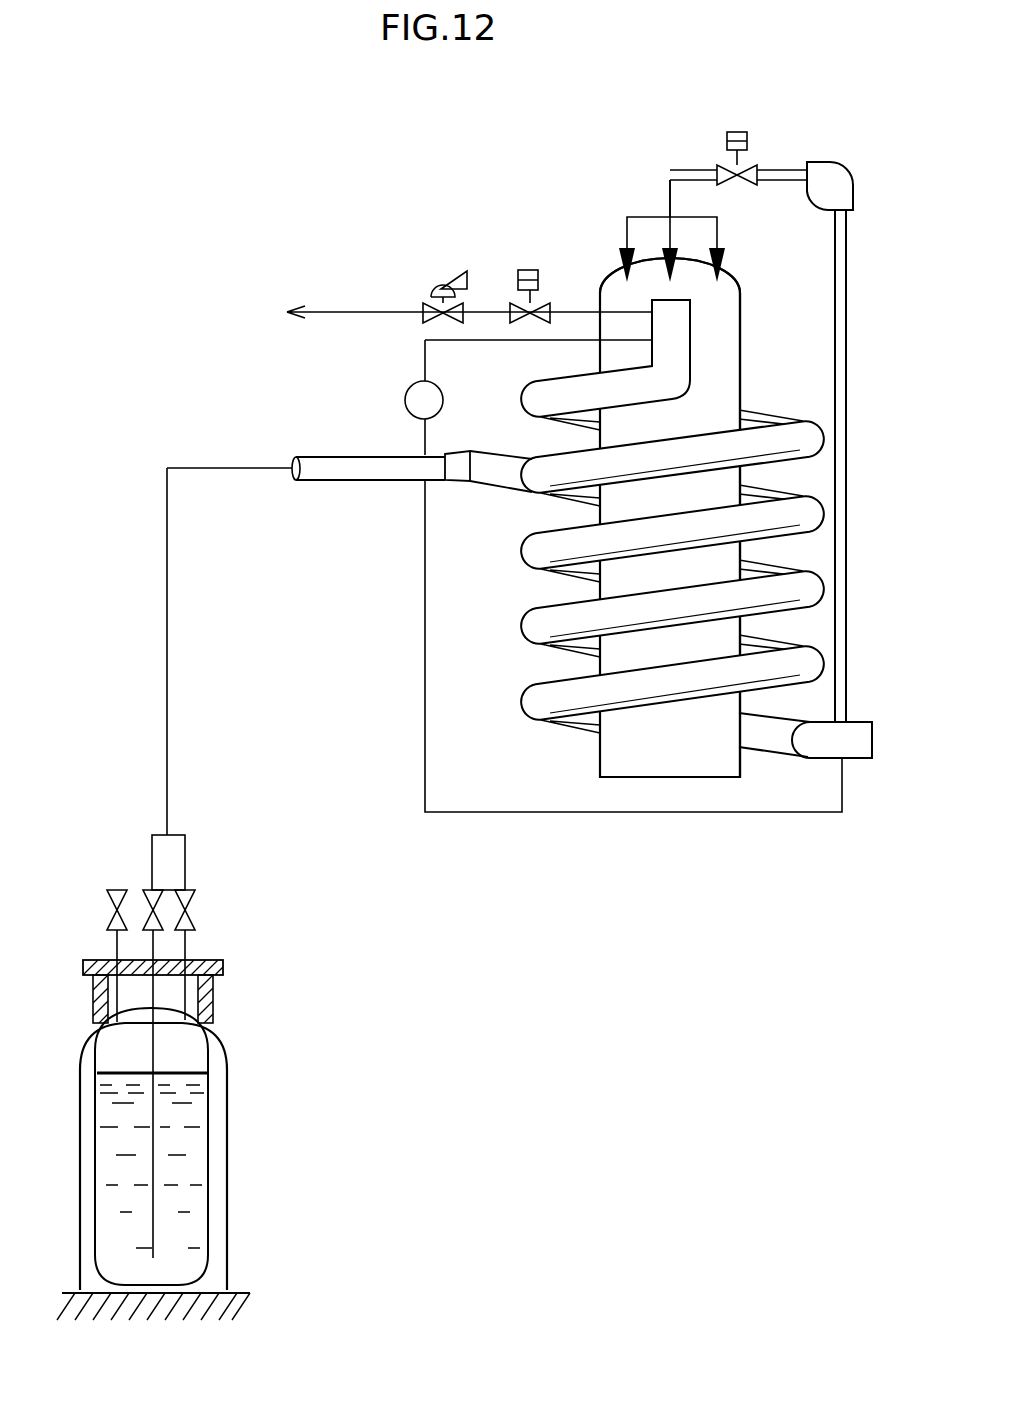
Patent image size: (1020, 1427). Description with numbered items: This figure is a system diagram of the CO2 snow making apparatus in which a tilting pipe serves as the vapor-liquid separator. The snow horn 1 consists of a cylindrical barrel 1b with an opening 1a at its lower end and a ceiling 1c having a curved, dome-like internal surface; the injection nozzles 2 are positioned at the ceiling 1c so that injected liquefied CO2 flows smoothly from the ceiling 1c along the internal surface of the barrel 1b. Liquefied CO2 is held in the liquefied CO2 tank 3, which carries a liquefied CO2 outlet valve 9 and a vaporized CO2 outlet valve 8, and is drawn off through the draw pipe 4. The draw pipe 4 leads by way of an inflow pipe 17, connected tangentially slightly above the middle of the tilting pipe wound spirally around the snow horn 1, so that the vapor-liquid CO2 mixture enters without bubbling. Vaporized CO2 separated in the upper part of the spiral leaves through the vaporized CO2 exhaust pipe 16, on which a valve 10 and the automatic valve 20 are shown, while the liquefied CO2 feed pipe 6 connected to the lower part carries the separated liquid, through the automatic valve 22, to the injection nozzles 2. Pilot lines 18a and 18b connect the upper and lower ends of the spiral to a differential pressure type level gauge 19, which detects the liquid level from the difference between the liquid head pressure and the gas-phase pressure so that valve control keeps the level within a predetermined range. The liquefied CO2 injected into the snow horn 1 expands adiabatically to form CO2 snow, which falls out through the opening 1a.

The snow horn 1 is at (758, 336).
The opening 1a is at (663, 778).
The cylindrical barrel 1b is at (718, 383).
The ceiling 1c is at (726, 292).
The injection nozzle 2 is at (722, 288).
The liquefied CO2 tank 3 is at (212, 1195).
The draw pipe 4 is at (168, 592).
The liquefied CO2 feed pipe 6 is at (847, 640).
The vaporized CO2 outlet valve 8 is at (192, 920).
The liquefied CO2 outlet valve 9 is at (148, 897).
The control valve 10 is at (438, 303).
The vaporized CO2 exhaust pipe 16 is at (340, 310).
The inflow pipe 17 is at (505, 485).
The pilot line 18a is at (484, 342).
The pilot line 18b is at (425, 600).
The differential pressure type level gauge 19 is at (410, 393).
The automatic valve 20 is at (515, 303).
The automatic valve 22 is at (746, 165).